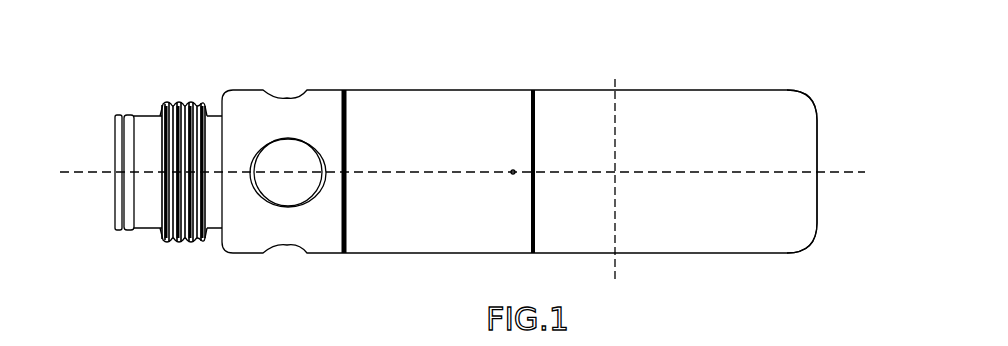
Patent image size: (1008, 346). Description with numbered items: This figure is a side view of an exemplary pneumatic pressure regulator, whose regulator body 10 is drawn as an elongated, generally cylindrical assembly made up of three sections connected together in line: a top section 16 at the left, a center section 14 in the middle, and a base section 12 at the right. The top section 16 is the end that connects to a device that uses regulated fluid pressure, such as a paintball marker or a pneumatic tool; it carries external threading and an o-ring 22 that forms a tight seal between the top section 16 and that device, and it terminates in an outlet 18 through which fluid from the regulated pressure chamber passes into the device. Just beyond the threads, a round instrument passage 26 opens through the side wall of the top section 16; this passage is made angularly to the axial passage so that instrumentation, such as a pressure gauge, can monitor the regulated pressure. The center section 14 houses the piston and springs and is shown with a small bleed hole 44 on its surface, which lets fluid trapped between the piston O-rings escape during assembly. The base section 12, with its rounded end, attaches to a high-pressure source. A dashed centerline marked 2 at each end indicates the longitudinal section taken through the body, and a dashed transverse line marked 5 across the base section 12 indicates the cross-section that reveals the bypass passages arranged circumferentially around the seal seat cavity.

The regulator body 10 is at (383, 74).
The base section 12 is at (746, 85).
The center section 14 is at (396, 261).
The top section 16 is at (230, 258).
The outlet 18 is at (115, 163).
The o-ring 22 is at (129, 140).
The instrument passage 26 is at (272, 187).
The bleed hole 44 is at (512, 174).
The section line 2- 2 is at (60, 172).
The section line 5- 5 is at (628, 282).